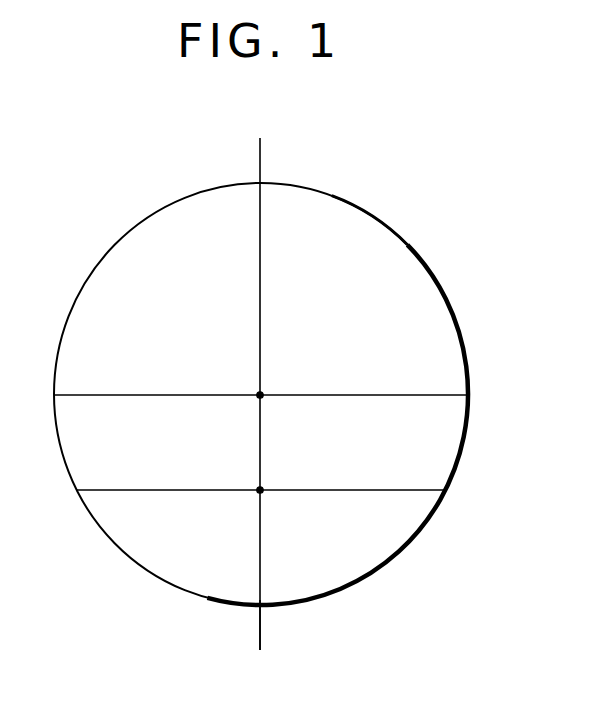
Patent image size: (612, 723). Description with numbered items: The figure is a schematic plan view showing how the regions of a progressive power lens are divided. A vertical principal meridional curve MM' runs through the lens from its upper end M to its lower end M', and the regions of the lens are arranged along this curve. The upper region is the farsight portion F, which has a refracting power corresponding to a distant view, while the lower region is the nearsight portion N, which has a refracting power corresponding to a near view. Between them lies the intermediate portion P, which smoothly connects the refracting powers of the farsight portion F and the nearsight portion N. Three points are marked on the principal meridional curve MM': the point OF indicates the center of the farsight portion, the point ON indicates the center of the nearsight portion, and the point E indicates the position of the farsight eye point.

The principal meridional curve M is at (275, 394).
The principal meridional curve M' is at (281, 627).
The farsight portion F is at (261, 366).
The intermediate portion P is at (261, 457).
The nearsight portion N is at (261, 547).
The center of the farsight portion OF is at (260, 350).
The farsight eye point E is at (259, 396).
The center of the nearsight portion ON is at (259, 491).